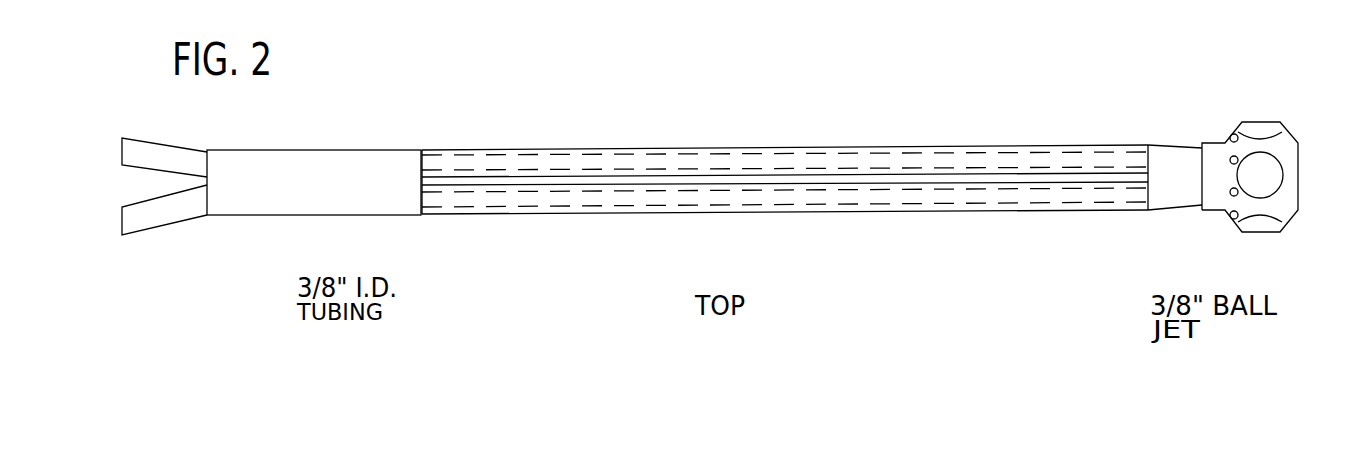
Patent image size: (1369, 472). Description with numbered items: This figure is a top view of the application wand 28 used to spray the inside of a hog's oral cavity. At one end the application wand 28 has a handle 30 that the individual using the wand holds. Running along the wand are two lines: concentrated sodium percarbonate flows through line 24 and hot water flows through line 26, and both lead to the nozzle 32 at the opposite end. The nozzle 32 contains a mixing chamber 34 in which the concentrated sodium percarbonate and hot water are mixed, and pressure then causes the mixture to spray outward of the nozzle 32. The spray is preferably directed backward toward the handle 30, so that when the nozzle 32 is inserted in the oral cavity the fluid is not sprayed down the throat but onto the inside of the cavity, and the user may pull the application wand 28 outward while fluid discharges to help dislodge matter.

The handle 30 is at (333, 150).
The application wand 28 is at (753, 122).
The line 26 is at (842, 158).
The line 24 is at (883, 195).
The nozzle 32 is at (1287, 143).
The mixing chamber 34 is at (1282, 207).